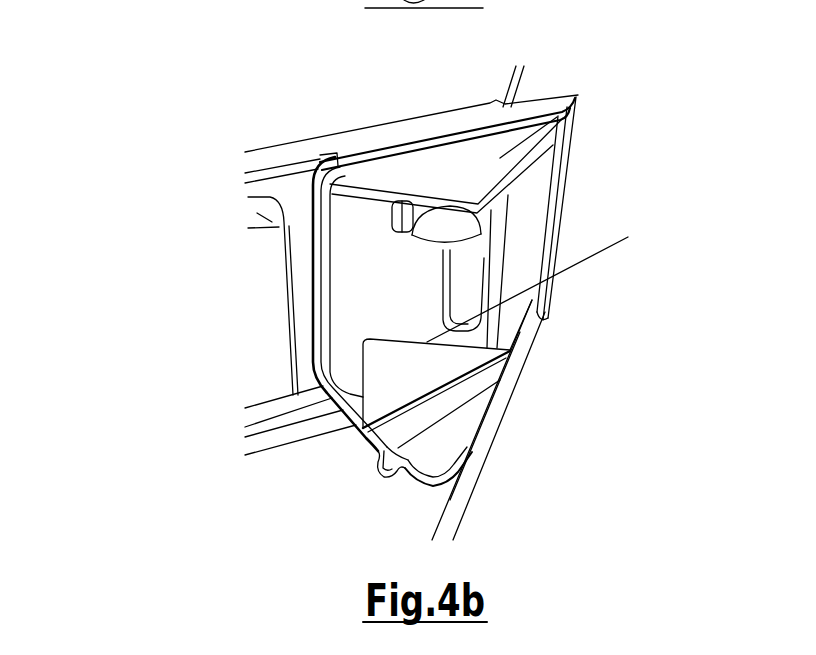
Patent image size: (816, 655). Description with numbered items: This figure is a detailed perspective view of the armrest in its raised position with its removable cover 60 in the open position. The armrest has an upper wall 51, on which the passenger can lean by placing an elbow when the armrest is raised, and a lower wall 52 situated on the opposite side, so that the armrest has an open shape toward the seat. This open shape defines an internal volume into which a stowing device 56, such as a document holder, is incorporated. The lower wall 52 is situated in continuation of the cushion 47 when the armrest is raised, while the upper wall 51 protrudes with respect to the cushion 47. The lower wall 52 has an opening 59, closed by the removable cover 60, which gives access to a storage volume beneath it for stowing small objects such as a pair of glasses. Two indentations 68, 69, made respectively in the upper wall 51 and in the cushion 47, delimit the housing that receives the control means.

The cushion 47 is at (297, 462).
The upper wall 51 is at (530, 107).
The lower wall 52 is at (490, 428).
The stowing device 56 is at (462, 296).
The opening 59 is at (437, 450).
The cover 60 is at (388, 368).
The indentation 68 is at (403, 201).
The indentation 69 is at (380, 472).